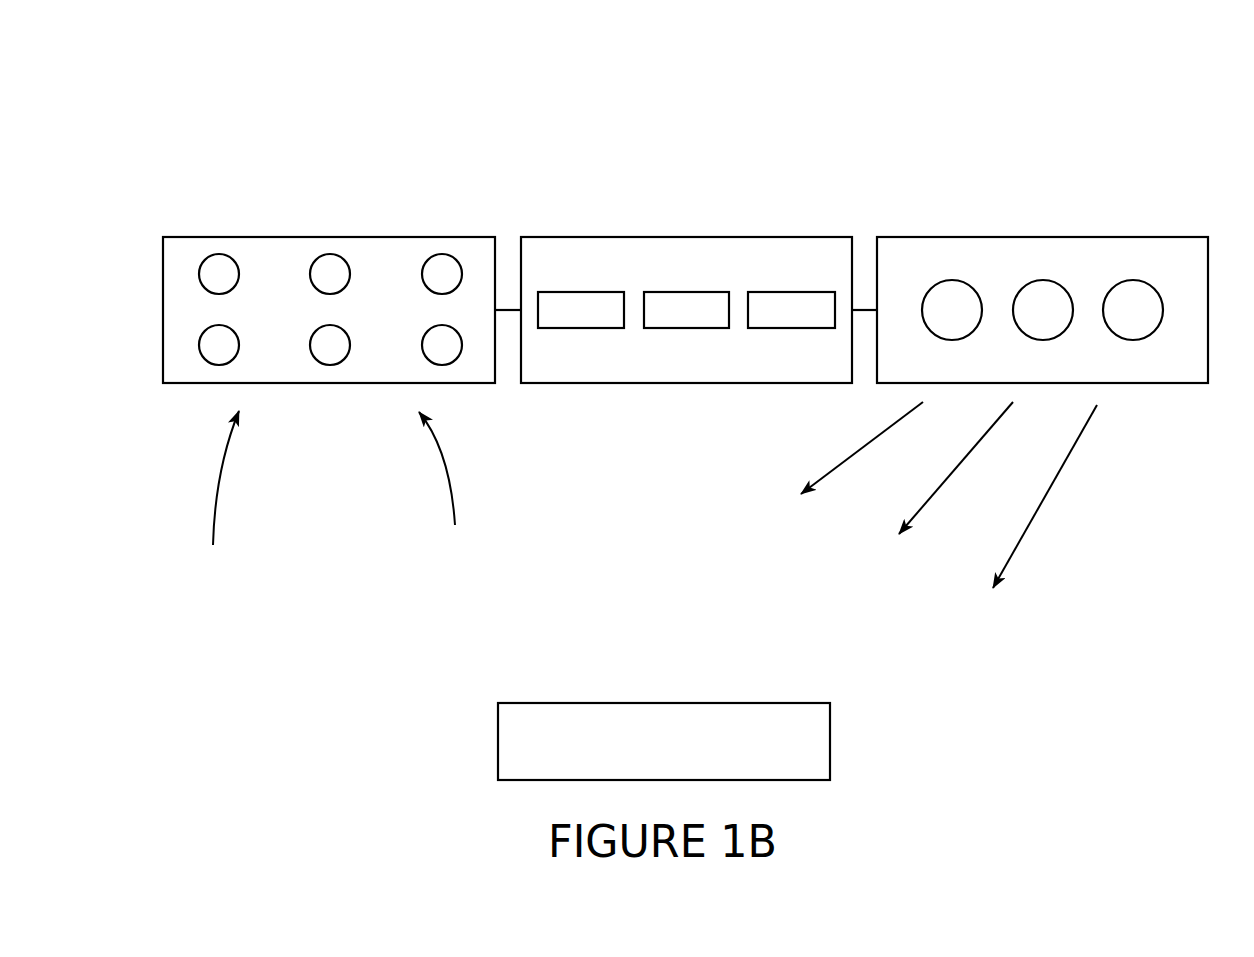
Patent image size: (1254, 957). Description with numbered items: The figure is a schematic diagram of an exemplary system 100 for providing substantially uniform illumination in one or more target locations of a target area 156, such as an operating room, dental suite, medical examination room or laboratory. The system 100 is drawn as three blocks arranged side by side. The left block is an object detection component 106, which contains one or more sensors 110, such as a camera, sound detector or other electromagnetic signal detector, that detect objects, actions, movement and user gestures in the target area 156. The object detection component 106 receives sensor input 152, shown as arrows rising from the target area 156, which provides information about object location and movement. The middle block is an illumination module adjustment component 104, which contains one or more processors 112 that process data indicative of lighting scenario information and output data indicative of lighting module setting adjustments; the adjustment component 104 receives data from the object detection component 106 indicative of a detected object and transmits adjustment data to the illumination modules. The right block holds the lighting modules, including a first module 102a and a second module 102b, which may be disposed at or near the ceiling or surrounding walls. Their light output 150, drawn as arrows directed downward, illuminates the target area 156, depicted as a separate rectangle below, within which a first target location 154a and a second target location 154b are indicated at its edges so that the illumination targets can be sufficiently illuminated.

The system 100 is at (1143, 118).
The first module 102a is at (939, 270).
The second module 102b is at (1074, 275).
The illumination module adjustment component 104 is at (686, 274).
The object detection component 106 is at (288, 277).
The sensors 110 is at (200, 297).
The processors 112 is at (686, 278).
The light output 150 is at (1030, 490).
The sensor input 152 is at (230, 569).
The first target location 154a is at (522, 699).
The second target location 154b is at (791, 699).
The target area 156 is at (622, 564).